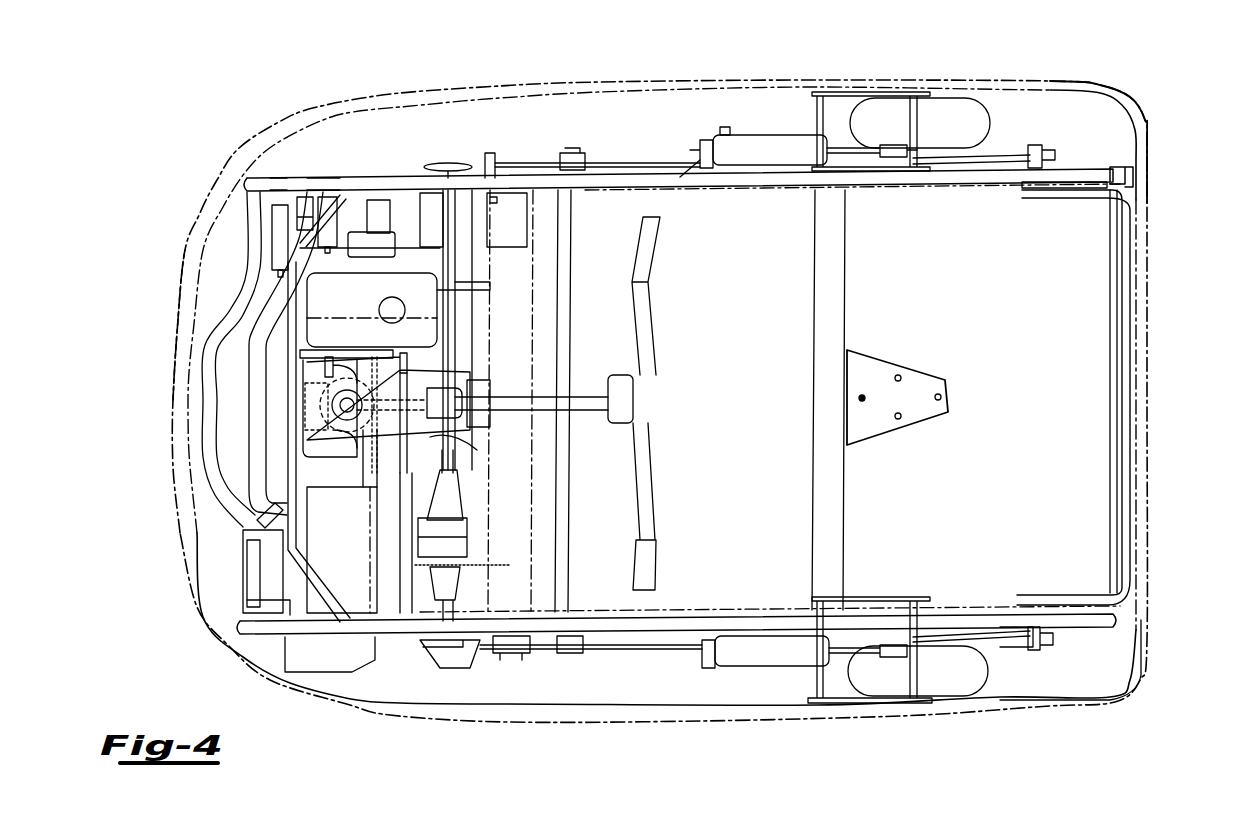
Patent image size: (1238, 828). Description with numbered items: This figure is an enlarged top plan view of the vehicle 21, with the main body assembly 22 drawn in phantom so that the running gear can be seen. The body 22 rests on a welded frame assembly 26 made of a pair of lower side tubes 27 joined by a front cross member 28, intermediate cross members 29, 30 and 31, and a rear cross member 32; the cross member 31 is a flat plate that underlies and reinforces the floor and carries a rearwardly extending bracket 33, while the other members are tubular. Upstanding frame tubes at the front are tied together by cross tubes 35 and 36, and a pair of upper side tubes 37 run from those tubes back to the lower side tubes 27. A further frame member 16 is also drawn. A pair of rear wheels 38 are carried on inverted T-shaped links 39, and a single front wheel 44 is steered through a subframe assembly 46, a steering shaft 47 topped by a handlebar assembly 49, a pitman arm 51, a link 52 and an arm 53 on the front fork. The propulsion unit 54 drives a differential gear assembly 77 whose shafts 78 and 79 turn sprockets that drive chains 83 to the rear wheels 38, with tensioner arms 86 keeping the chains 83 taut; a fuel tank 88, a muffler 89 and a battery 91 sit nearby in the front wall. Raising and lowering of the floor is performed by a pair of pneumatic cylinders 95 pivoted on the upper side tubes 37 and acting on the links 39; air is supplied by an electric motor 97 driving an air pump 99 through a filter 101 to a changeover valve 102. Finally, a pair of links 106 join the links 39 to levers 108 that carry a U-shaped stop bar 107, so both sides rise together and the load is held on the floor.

The frame member 16 is at (510, 560).
The vehicle 21 is at (859, 65).
The main body assembly 22 is at (1092, 82).
The frame assembly 26 is at (1093, 158).
The lower side tubes 27 is at (1093, 167).
The front cross member 28 is at (188, 425).
The intermediate cross member 29 is at (383, 675).
The intermediate cross member 30 is at (573, 527).
The intermediate cross member 31 is at (810, 510).
The rear cross member 32 is at (1108, 477).
The rearwardly extending bracket 33 is at (937, 377).
The cross tube 35 is at (323, 637).
The cross tube 36 is at (480, 480).
The upper side tubes 37 is at (690, 170).
The rear wheels 38 is at (987, 110).
The inverted T-shaped links 39 is at (870, 627).
The front wheel 44 is at (215, 450).
The subframe assembly 46 is at (420, 438).
The steering shaft 47 is at (593, 405).
The handlebar assembly 49 is at (647, 297).
The pitman arm 51 is at (460, 358).
The link 52 is at (460, 332).
The arm 53 is at (333, 317).
The propulsion unit 54 is at (283, 667).
The differential gear assembly 77 is at (487, 513).
The shaft 78 is at (417, 667).
The shaft 79 is at (440, 163).
The chains 83 is at (640, 163).
The tensioner arms 86 is at (583, 153).
The fuel tank 88 is at (465, 305).
The muffler 89 is at (455, 283).
The battery 91 is at (533, 223).
The pneumatic cylinders 95 is at (767, 143).
The electric motor 97 is at (383, 215).
The air pump 99 is at (363, 232).
The filter 101 is at (270, 230).
The changeover valve 102 is at (345, 193).
The links 106 is at (987, 165).
The U-shaped stop bar 107 is at (1138, 262).
The levers 108 is at (1040, 145).